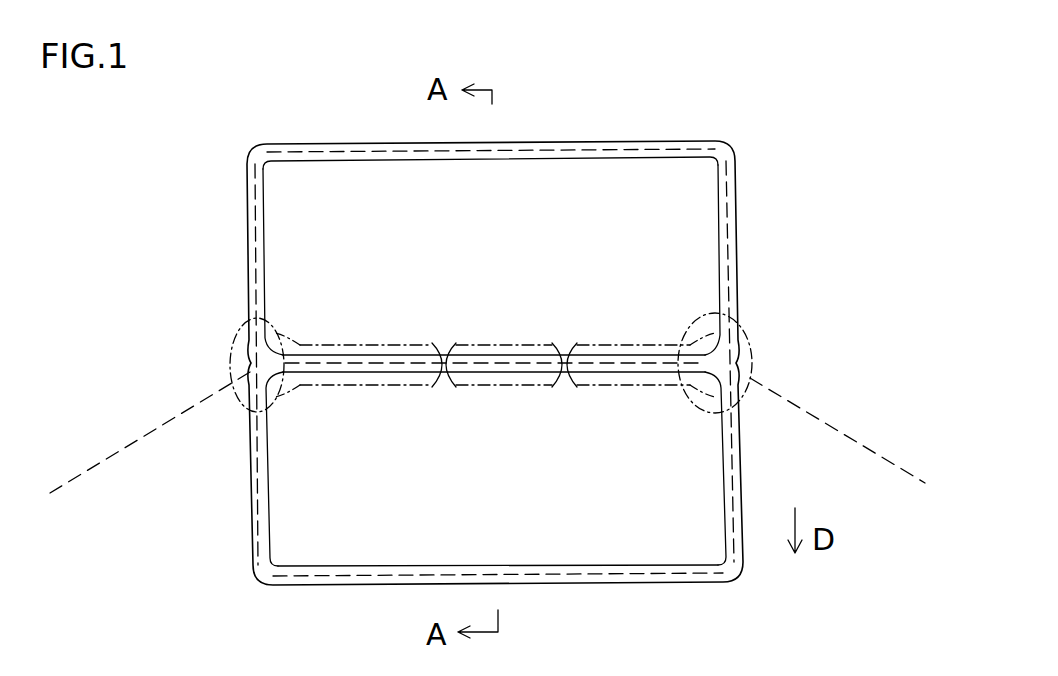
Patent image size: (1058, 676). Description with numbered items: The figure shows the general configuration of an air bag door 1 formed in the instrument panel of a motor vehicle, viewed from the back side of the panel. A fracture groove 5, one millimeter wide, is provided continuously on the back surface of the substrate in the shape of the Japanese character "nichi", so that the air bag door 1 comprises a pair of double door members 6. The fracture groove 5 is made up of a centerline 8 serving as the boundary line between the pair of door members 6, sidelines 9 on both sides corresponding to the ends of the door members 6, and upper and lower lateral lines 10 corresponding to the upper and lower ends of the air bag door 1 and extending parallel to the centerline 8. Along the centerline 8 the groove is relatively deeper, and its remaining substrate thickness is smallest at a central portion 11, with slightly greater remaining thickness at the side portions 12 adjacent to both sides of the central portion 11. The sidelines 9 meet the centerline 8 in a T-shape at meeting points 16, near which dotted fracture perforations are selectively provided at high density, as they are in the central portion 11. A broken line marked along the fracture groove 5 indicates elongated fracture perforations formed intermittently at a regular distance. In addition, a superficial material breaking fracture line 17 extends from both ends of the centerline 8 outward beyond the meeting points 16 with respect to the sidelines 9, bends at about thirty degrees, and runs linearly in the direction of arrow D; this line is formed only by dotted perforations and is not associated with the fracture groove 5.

The air bag door 1 is at (738, 122).
The fracture groove 5 is at (660, 140).
The door member 6 is at (328, 180).
The centerline 8 is at (340, 384).
The sideline 9 is at (740, 236).
The upper and lower lateral line 10 is at (368, 143).
The central portion 11 is at (508, 346).
The side portion 12 is at (338, 352).
The meeting point 16 is at (230, 353).
The superficial material breaking fracture line 17 is at (157, 424).